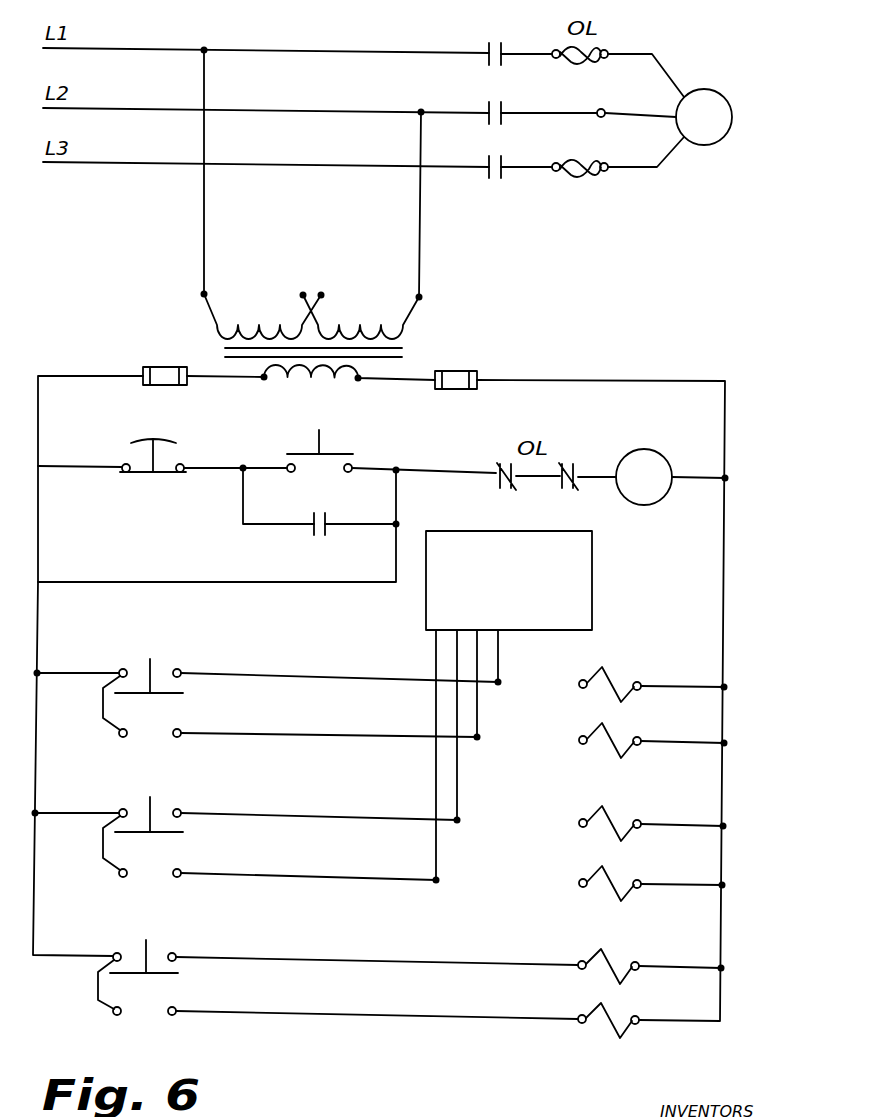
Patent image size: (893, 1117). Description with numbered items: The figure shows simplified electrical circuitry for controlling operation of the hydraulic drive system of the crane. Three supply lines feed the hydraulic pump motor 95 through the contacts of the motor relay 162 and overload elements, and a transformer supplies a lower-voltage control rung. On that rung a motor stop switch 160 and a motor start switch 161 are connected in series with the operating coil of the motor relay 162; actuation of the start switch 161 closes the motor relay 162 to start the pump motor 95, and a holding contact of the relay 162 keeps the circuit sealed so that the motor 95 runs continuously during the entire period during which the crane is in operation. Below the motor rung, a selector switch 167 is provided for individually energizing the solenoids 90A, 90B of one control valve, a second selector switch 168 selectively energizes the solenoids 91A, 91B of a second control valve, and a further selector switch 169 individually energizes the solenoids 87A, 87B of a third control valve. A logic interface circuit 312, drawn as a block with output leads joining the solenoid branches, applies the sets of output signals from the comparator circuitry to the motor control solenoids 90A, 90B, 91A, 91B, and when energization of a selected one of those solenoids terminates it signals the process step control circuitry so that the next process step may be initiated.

The motor relay 162 is at (487, 46).
The pump motor 95 is at (730, 62).
The motor stop switch 160 is at (153, 449).
The motor start switch 161 is at (318, 444).
The logic interface circuit 312 is at (509, 580).
The selector switch 167 is at (151, 662).
The second selector switch 168 is at (151, 800).
The selector switch 169 is at (147, 945).
The solenoid 90A is at (601, 668).
The solenoid 90B is at (601, 724).
The solenoid 91A is at (601, 807).
The solenoid 91B is at (601, 867).
The solenoid 87A is at (600, 950).
The solenoid 87B is at (600, 1004).